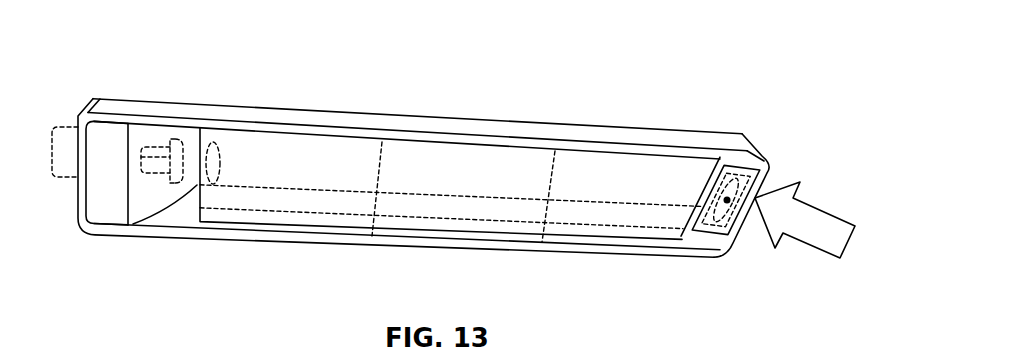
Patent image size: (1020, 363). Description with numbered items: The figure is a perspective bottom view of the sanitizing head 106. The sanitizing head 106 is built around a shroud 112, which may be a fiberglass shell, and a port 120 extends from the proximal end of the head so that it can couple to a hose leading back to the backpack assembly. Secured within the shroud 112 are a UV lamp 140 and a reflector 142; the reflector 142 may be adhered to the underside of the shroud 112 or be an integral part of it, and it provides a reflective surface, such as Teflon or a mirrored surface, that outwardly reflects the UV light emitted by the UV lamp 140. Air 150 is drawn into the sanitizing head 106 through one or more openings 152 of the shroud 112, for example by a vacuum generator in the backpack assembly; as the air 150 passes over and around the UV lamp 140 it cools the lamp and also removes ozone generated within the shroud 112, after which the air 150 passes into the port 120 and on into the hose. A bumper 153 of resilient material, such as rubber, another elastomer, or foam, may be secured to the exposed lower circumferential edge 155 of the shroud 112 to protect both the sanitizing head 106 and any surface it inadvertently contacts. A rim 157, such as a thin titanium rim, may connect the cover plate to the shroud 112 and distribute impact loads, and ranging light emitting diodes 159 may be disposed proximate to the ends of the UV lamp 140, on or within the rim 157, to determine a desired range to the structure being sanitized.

The sanitizing head 106 is at (797, 160).
The shroud 112 is at (622, 127).
The port 120 is at (62, 165).
The UV lamp 140 is at (193, 172).
The reflector 142 is at (693, 222).
The air 150 is at (830, 212).
The openings 152 is at (708, 227).
The bumper 153 is at (146, 120).
The exposed lower circumferential edge 155 is at (275, 125).
The rim 157 is at (762, 167).
The ranging light emitting diodes 159 is at (181, 160).